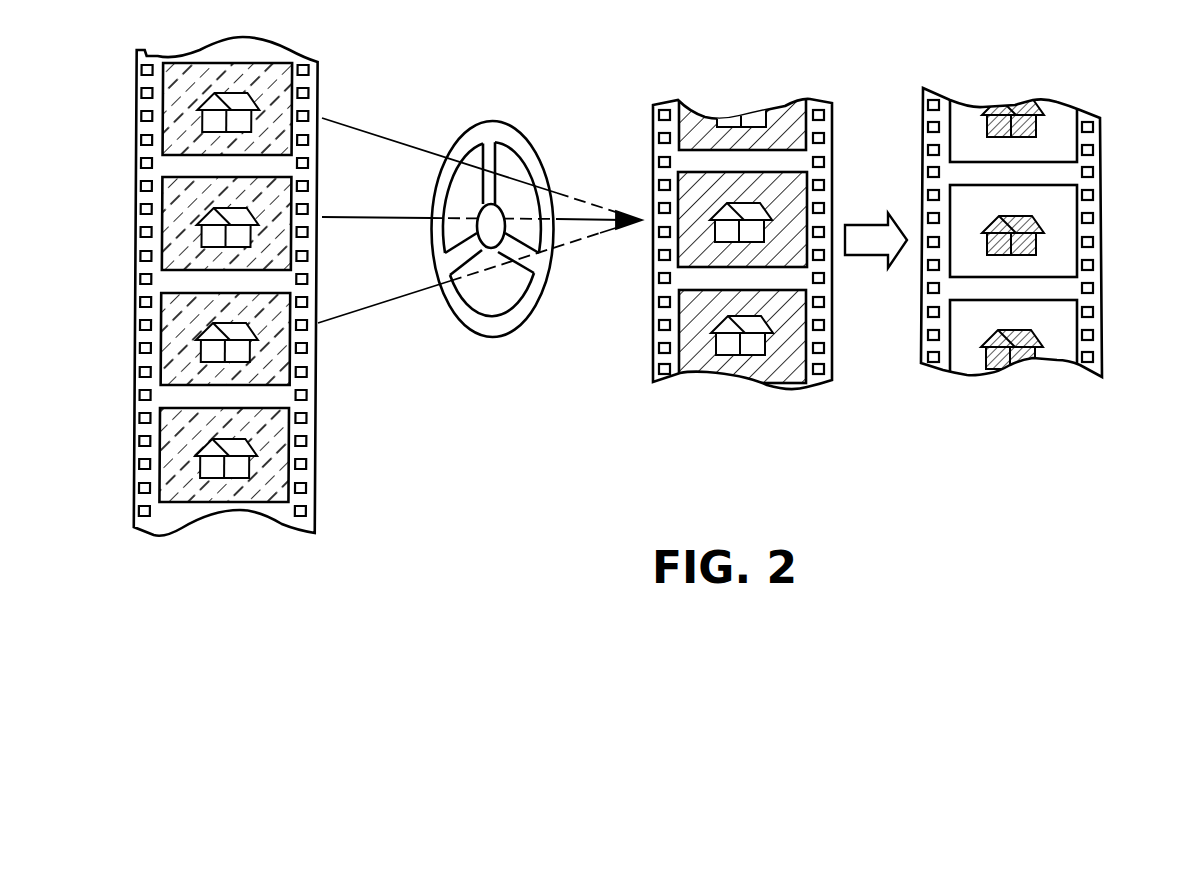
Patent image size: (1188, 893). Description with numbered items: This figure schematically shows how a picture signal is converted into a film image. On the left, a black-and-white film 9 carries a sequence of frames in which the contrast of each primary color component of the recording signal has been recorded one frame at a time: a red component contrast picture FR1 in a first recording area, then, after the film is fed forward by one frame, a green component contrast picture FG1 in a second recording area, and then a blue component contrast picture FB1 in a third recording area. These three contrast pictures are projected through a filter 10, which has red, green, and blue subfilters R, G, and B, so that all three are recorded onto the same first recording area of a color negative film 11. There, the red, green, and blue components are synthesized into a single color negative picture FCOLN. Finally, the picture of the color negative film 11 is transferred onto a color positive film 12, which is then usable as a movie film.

The black-and-white film 9 is at (318, 61).
The filter 10 is at (510, 126).
The color negative film 11 is at (832, 104).
The color positive film 12 is at (1100, 120).
The red component contrast picture FR1 is at (285, 98).
The green component contrast picture FG1 is at (290, 248).
The blue component contrast picture FB1 is at (275, 368).
The color negative picture FCOLN is at (695, 245).